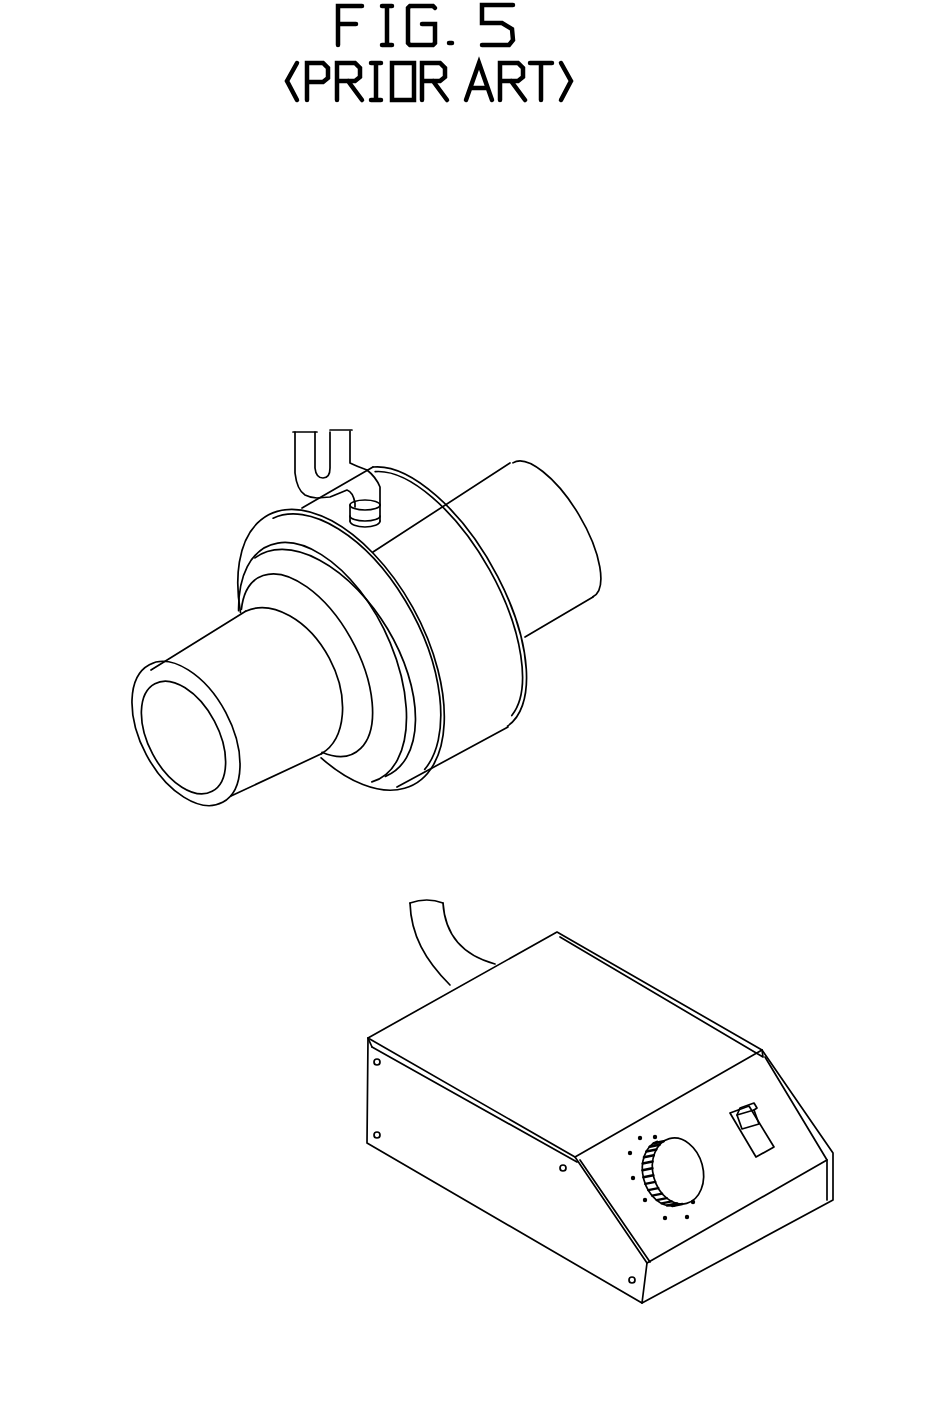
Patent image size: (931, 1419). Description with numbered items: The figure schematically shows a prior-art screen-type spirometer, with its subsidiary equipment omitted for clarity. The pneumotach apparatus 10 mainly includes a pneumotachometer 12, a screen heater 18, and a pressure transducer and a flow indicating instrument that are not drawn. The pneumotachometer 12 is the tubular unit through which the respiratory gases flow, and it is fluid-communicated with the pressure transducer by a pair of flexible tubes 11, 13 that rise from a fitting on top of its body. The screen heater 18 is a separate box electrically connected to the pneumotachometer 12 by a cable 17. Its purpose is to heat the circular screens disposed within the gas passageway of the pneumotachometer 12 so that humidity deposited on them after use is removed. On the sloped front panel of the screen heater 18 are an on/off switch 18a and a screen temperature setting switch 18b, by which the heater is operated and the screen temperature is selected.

The pneumotach apparatus 10 is at (195, 331).
The flexible tube 11 is at (338, 426).
The pneumotachometer 12 is at (202, 560).
The flexible tube 13 is at (304, 473).
The cable 17 is at (428, 939).
The screen heater 18 is at (646, 960).
The on/off switch 18a is at (753, 1103).
The screen temperature setting switch 18b is at (645, 1188).